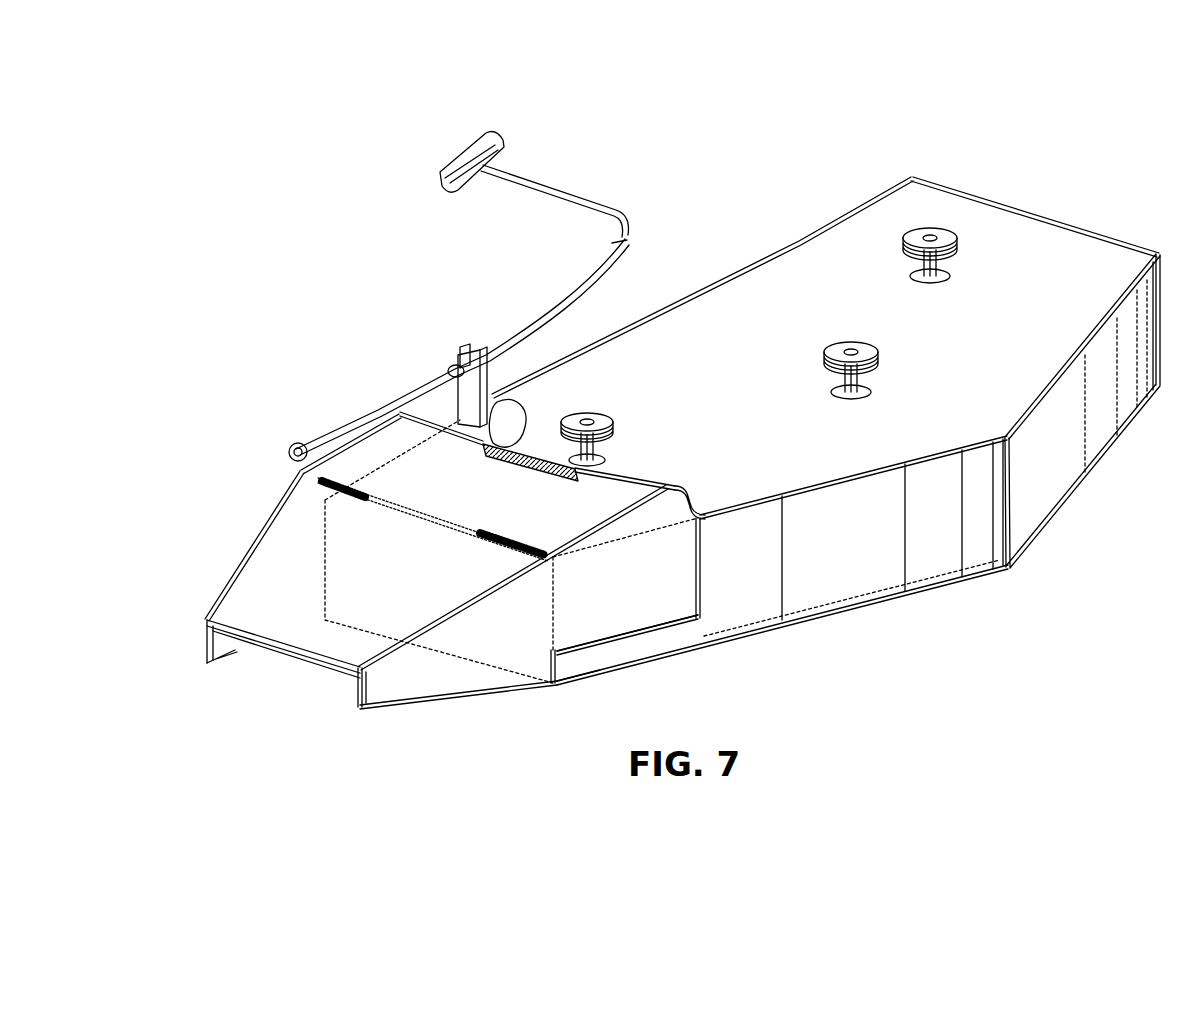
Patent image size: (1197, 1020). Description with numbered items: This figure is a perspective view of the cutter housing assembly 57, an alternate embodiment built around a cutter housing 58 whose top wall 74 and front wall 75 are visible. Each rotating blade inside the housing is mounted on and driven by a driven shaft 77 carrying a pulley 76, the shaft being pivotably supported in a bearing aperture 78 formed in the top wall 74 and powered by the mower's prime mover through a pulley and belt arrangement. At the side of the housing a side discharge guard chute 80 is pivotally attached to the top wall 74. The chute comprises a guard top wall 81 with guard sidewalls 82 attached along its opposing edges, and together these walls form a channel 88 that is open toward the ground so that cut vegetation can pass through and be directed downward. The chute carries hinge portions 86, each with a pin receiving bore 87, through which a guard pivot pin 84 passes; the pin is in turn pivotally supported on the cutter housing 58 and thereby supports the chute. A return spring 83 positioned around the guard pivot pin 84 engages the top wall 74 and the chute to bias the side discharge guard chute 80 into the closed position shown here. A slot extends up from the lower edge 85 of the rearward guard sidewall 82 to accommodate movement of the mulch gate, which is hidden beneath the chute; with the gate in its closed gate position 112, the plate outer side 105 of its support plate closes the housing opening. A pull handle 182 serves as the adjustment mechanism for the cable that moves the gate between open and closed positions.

The cutter housing assembly 57 is at (332, 400).
The cutter housing 58 is at (826, 407).
The top wall 74 is at (930, 193).
The front wall 75 is at (1055, 480).
The pulley 76 is at (790, 345).
The driven shaft 77 is at (967, 270).
The bearing aperture 78 is at (932, 315).
The side discharge guard chute 80 is at (425, 542).
The guard top wall 81 is at (258, 588).
The guard sidewalls 82 is at (207, 645).
The return spring 83 is at (522, 440).
The guard pivot pin 84 is at (560, 477).
The lower edge 85 is at (230, 660).
The hinge portions 86 is at (405, 411).
The pin receiving bore 87 is at (528, 393).
The channel 88 is at (290, 672).
The plate outer side 105 is at (530, 672).
The closed gate position 112 is at (540, 685).
The pull handle 182 is at (450, 143).